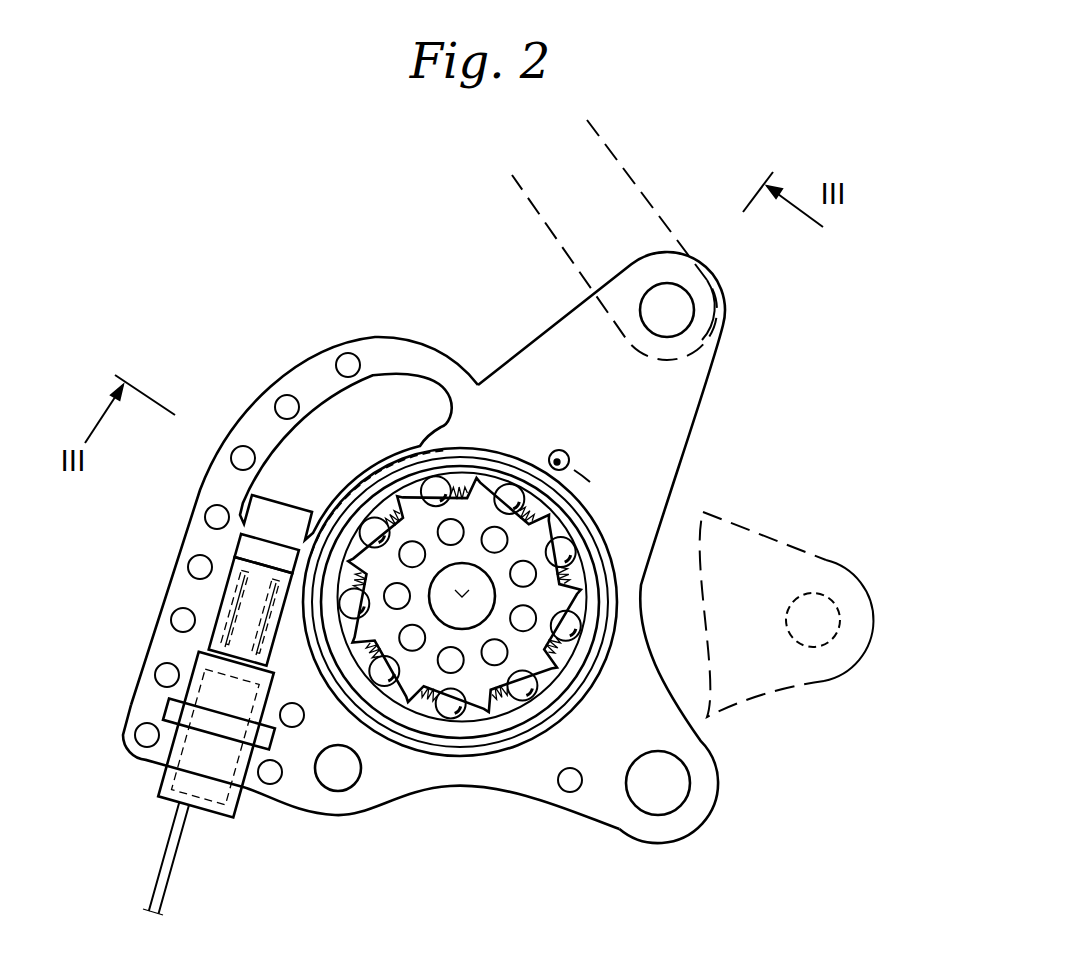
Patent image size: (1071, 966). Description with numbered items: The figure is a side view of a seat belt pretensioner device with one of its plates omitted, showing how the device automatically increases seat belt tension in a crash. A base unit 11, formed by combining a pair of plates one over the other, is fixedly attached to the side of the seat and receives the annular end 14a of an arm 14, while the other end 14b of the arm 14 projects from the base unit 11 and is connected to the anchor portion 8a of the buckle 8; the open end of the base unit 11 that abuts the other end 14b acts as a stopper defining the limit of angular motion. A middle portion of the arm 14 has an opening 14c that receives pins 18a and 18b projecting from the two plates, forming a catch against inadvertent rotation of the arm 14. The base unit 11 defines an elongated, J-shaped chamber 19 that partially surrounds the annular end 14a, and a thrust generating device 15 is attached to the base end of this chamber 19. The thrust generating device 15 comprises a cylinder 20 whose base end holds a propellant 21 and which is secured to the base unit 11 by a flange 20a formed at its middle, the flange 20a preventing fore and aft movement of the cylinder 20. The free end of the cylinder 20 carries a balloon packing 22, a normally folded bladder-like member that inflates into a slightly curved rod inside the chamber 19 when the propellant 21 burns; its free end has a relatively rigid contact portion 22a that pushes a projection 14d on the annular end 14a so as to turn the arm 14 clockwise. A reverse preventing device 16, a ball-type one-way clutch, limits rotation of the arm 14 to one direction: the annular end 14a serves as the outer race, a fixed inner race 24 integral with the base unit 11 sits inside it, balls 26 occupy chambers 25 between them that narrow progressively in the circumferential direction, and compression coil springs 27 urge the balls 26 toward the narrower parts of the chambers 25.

The buckle 8 is at (647, 193).
The anchor portion 8a is at (707, 328).
The base unit 11 is at (378, 342).
The arm 14 is at (546, 307).
The annular end 14a is at (513, 710).
The other end 14b is at (694, 402).
The opening 14c is at (572, 470).
The projection 14d is at (263, 415).
The thrust generating device 15 is at (235, 827).
The reverse preventing device 16 is at (457, 757).
The pin 18a is at (617, 413).
The pin 18b is at (560, 450).
The chamber 19 is at (298, 505).
The cylinder 20 is at (167, 777).
The flange 20a is at (270, 742).
The propellant 21 is at (178, 804).
The balloon packing 22 is at (247, 607).
The contact portion 22a is at (247, 503).
The inner race 24 is at (575, 592).
The chambers 25 is at (548, 547).
The balls 26 is at (510, 482).
The compression coil springs 27 is at (572, 568).